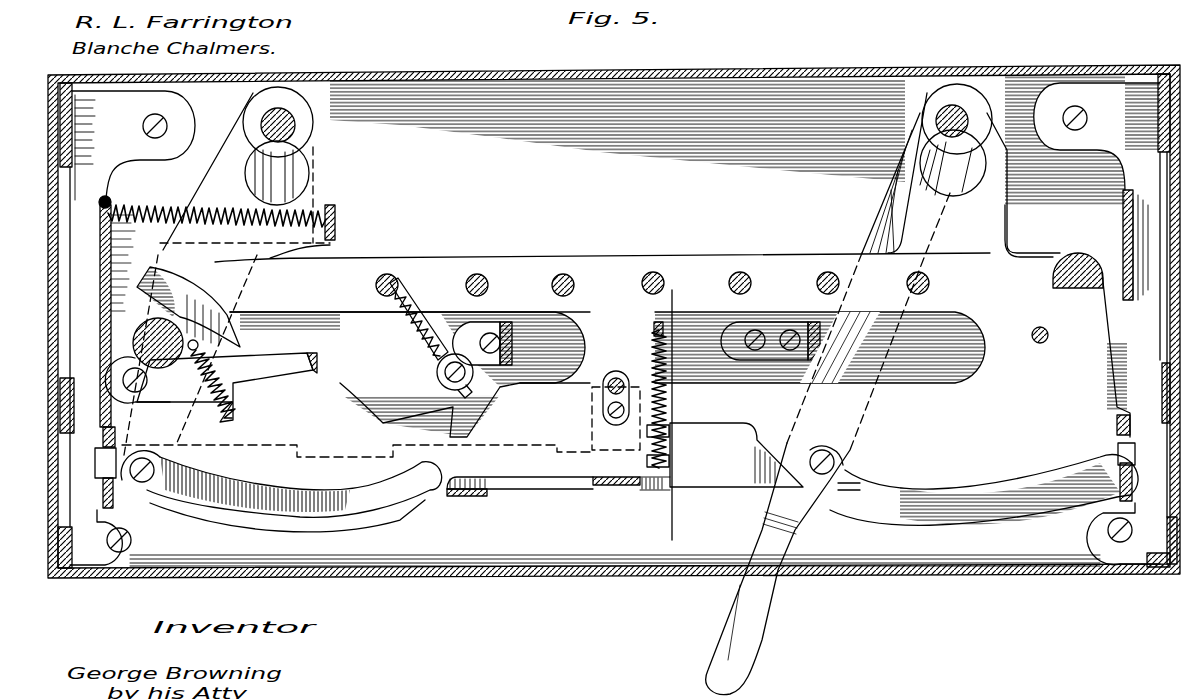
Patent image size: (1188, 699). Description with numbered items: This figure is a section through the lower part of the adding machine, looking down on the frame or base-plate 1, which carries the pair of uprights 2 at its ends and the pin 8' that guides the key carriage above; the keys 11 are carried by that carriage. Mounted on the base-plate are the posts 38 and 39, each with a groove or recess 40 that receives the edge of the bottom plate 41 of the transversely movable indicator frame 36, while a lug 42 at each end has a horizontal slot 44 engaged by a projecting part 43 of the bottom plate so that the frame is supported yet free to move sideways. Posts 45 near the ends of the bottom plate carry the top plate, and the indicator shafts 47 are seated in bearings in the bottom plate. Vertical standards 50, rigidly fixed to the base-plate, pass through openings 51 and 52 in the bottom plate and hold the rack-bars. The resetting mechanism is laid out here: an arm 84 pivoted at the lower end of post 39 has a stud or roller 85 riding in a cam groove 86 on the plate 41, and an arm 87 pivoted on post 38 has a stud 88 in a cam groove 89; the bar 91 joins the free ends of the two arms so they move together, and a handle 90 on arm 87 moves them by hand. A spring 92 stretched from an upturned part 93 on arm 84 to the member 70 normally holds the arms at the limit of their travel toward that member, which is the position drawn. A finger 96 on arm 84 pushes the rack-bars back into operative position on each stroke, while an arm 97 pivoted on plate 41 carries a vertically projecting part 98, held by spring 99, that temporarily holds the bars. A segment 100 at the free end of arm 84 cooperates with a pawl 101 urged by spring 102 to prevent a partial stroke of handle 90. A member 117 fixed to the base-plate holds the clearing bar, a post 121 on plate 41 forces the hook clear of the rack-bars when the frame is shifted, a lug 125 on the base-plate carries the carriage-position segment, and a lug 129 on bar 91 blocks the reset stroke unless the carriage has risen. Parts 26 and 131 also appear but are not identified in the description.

The frame or base-plate 1 is at (785, 85).
The uprights 2 is at (76, 135).
The pin 8' is at (601, 410).
The keys 11 is at (700, 330).
The screw lug 26 is at (615, 534).
The transversely movable frame 36 is at (335, 258).
The post 38 is at (960, 98).
The post 39 is at (280, 112).
The groove or recess 40 is at (300, 145).
The bottom plate 41 is at (700, 283).
The lugs 42 is at (103, 490).
The projecting part 43 is at (95, 462).
The horizontal slot 44 is at (103, 440).
The posts 45 is at (1078, 262).
The shaft 47 is at (490, 283).
The vertical standards 50 is at (508, 345).
The opening 51 is at (655, 325).
The opening 52 is at (575, 325).
The member 70 is at (100, 250).
The arm 84 is at (175, 240).
The projecting stud or roller 85 is at (150, 490).
The cam groove 86 is at (335, 520).
The arm 87 is at (882, 217).
The stud 88 is at (845, 458).
The cam groove 89 is at (985, 515).
The handle 90 is at (748, 645).
The bar 91 is at (560, 492).
The spring 92 is at (165, 212).
The upturned part 93 is at (332, 207).
The finger 96 is at (172, 290).
The arm 97 is at (278, 370).
The vertically projecting part 98 is at (324, 357).
The spring 99 is at (222, 345).
The segment 100 is at (417, 490).
The pawl 101 is at (474, 374).
The spring 102 is at (410, 322).
The member 117 is at (1133, 205).
The post 121 is at (1046, 340).
The lug 125 is at (610, 488).
The lug 129 is at (462, 496).
The bottom bar 131 is at (595, 570).